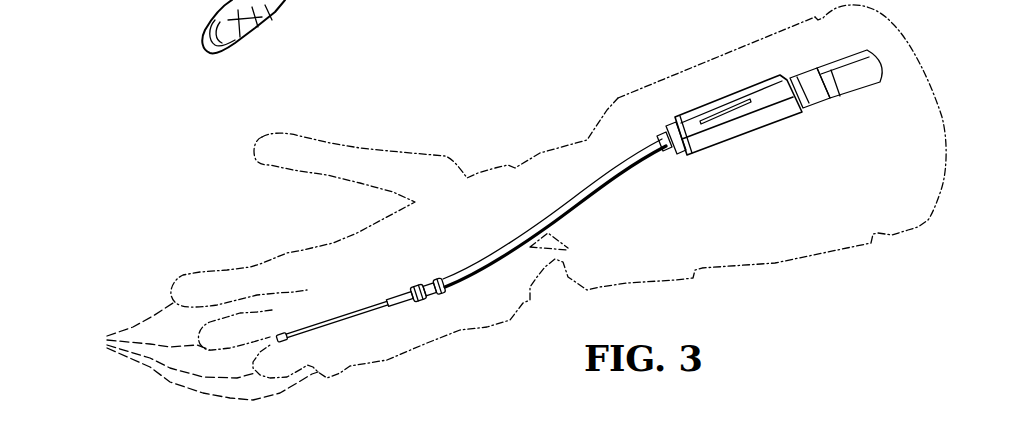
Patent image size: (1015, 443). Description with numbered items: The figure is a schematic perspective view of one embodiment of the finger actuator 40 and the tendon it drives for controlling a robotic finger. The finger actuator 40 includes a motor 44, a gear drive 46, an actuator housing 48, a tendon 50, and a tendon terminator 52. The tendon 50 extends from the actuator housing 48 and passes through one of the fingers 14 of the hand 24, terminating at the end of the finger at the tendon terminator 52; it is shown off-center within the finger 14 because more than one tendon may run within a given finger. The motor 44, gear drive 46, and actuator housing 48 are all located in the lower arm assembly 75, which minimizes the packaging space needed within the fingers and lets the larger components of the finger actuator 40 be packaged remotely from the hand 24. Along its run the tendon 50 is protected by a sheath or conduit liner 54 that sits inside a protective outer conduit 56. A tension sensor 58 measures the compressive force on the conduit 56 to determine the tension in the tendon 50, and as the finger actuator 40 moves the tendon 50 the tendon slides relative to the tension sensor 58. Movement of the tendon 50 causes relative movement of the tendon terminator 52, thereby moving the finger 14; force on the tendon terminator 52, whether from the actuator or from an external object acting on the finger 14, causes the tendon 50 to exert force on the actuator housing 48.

The finger 14 is at (200, 351).
The hand 24 is at (451, 239).
The finger actuator 40 is at (560, 112).
The motor 44 is at (858, 70).
The gear drive 46 is at (818, 88).
The actuator housing 48 is at (743, 128).
The tendon 50 is at (330, 322).
The tendon terminator 52 is at (279, 332).
The conduit liner 54 is at (400, 297).
The conduit 56 is at (580, 203).
The tension sensor 58 is at (440, 297).
The lower arm assembly 75 is at (727, 57).